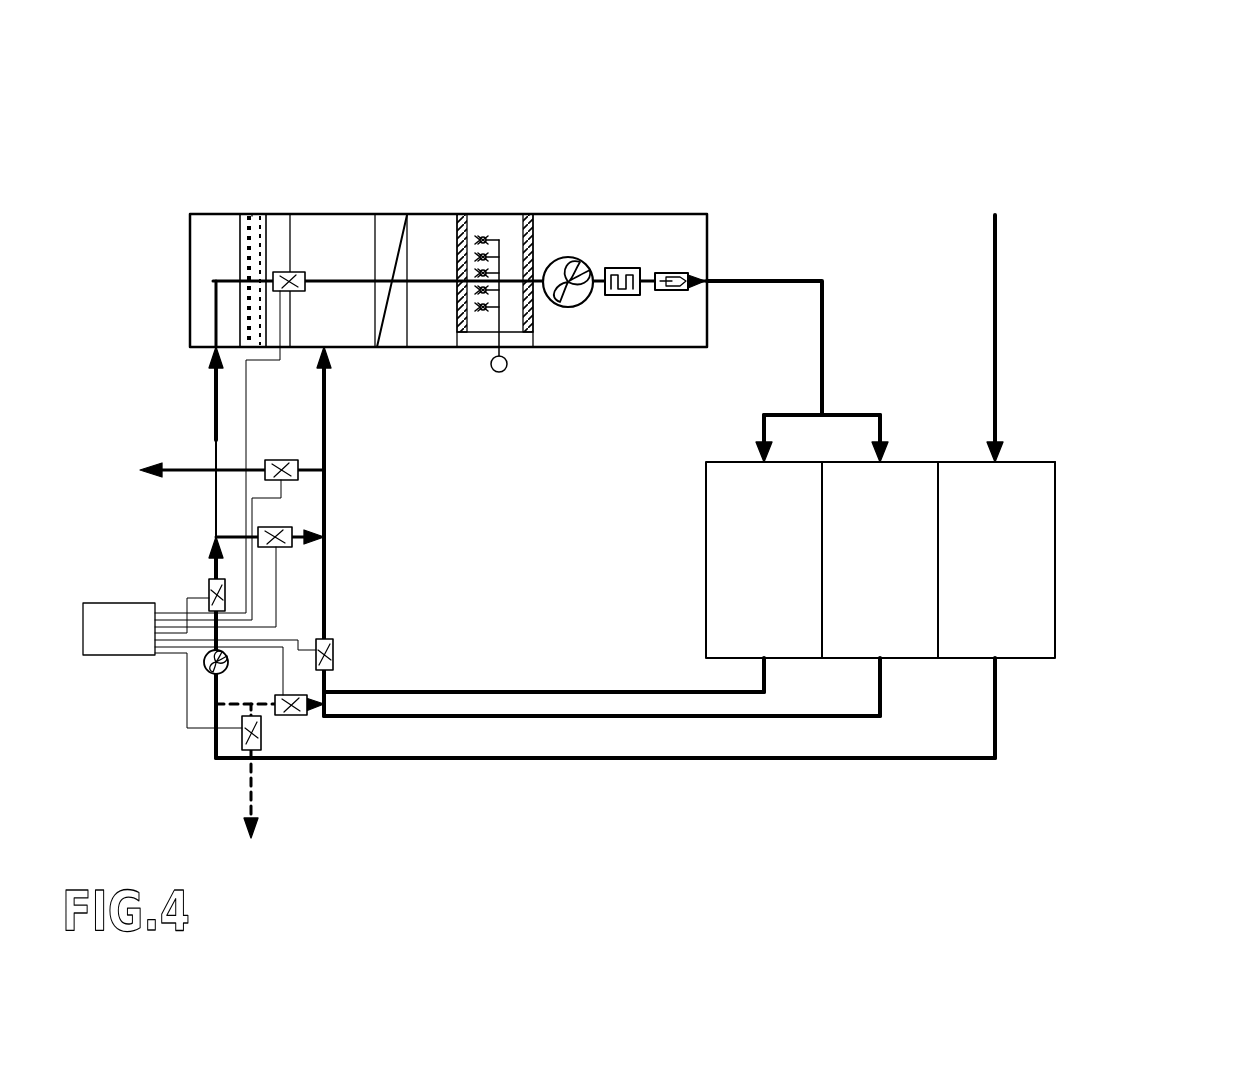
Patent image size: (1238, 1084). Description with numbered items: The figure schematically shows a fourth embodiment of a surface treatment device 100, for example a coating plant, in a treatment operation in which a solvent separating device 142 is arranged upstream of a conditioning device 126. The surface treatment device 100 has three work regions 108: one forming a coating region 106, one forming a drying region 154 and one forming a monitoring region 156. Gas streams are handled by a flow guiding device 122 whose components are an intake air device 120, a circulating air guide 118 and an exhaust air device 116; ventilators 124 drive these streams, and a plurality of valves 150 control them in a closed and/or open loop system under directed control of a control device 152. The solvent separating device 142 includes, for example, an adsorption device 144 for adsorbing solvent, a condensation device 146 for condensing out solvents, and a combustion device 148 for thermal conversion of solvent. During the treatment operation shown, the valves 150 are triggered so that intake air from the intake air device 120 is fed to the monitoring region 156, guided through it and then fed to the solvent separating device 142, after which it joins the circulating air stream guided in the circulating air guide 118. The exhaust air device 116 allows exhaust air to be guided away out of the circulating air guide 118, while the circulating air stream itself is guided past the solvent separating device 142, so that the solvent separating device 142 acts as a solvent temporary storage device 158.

The surface treatment device 100 is at (790, 163).
The coating region 106 is at (745, 638).
The work region 108 is at (787, 643).
The exhaust air device 116 is at (190, 471).
The circulating air guide 118 is at (328, 585).
The intake air device 120 is at (1000, 330).
The flow guiding device 122 is at (871, 205).
The ventilator 124 is at (205, 668).
The conditioning device 126 is at (519, 208).
The solvent separating device 142 is at (245, 237).
The adsorption device 144 is at (245, 305).
The condensation device 146 is at (245, 318).
The combustion device 148 is at (245, 328).
The valve 150 is at (305, 289).
The control device 152 is at (132, 618).
The drying region 154 is at (920, 547).
The monitoring region 156 is at (997, 504).
The solvent temporary storage device 158 is at (245, 262).